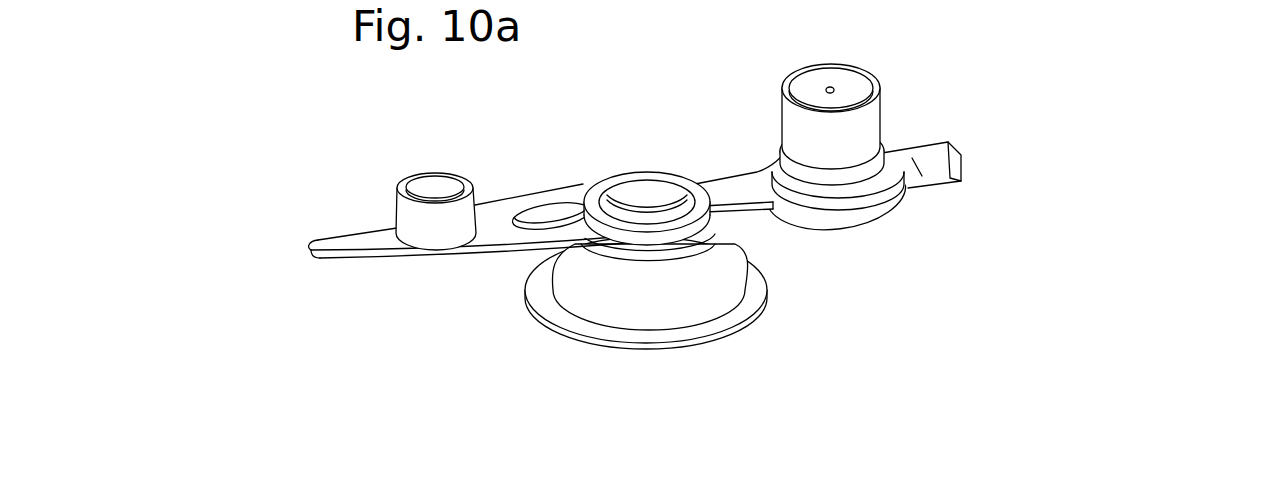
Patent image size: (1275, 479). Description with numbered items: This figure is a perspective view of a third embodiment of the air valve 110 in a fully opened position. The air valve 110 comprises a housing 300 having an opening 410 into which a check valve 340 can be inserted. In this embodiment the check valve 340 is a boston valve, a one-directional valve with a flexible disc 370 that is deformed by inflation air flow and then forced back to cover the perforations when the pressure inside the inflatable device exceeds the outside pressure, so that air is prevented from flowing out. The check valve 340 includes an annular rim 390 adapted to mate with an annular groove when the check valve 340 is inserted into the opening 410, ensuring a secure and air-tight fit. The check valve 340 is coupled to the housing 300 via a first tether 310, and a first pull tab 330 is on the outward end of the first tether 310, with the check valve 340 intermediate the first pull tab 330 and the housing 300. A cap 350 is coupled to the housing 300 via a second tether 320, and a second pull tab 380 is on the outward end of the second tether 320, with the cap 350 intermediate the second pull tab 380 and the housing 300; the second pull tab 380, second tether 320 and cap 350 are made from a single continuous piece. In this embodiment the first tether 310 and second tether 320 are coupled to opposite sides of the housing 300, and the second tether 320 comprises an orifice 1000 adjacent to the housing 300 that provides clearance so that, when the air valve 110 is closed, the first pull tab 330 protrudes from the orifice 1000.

The air valve 110 is at (297, 157).
The housing 300 is at (693, 247).
The first tether 310 is at (752, 214).
The second tether 320 is at (444, 229).
The first pull tab 330 is at (940, 186).
The check valve 340 is at (878, 84).
The cap 350 is at (430, 252).
The flexible disc 370 is at (856, 82).
The second pull tab 380 is at (319, 261).
The annular rim 390 is at (778, 160).
The opening 410 is at (642, 213).
The orifice 1000 is at (546, 212).